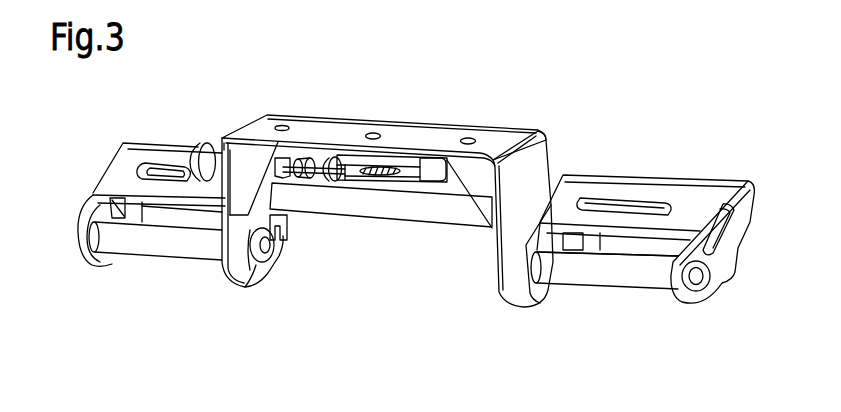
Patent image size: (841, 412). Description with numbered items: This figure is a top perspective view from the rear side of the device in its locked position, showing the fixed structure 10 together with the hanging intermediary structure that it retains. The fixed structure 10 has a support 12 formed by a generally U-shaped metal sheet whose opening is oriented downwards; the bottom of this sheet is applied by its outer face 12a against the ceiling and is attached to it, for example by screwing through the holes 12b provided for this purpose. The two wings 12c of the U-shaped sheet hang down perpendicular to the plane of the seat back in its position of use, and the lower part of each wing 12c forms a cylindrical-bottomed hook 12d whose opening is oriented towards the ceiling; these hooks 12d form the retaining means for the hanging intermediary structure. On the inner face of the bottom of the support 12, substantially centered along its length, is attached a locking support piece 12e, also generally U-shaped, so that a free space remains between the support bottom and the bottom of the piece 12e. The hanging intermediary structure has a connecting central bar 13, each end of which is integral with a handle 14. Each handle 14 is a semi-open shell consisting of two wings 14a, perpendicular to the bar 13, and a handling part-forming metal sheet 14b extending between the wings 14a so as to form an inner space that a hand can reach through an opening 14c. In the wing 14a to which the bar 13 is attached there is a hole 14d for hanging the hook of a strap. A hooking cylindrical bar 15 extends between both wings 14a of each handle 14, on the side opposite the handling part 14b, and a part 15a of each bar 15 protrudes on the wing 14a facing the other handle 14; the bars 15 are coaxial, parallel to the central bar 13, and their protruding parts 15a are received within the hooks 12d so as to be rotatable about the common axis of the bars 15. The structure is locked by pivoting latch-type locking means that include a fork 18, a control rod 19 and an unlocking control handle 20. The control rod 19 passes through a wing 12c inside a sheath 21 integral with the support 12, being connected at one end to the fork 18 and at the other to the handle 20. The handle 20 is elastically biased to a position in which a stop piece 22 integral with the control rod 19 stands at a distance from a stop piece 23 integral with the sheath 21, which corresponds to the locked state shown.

The fixed structure 10 is at (521, 121).
The support 12 is at (493, 127).
The outer face 12a is at (407, 137).
The holes 12b is at (372, 132).
The wings 12c is at (533, 167).
The hook 12d is at (513, 305).
The locking support piece 12e is at (433, 170).
The connecting central bar 13 is at (363, 210).
The handle 14 is at (122, 143).
The wings 14a is at (95, 200).
The handling part-forming metal sheet 14b is at (152, 143).
The opening 14c is at (200, 221).
The hole 14d is at (650, 177).
The hooking cylindrical bar 15 is at (123, 245).
The protruding part 15a is at (274, 252).
The fork 18 is at (376, 186).
The control rod 19 is at (316, 178).
The unlocking control handle 20 is at (200, 143).
The sheath 21 is at (291, 153).
The stop piece 22 is at (336, 157).
The stop piece 23 is at (301, 157).